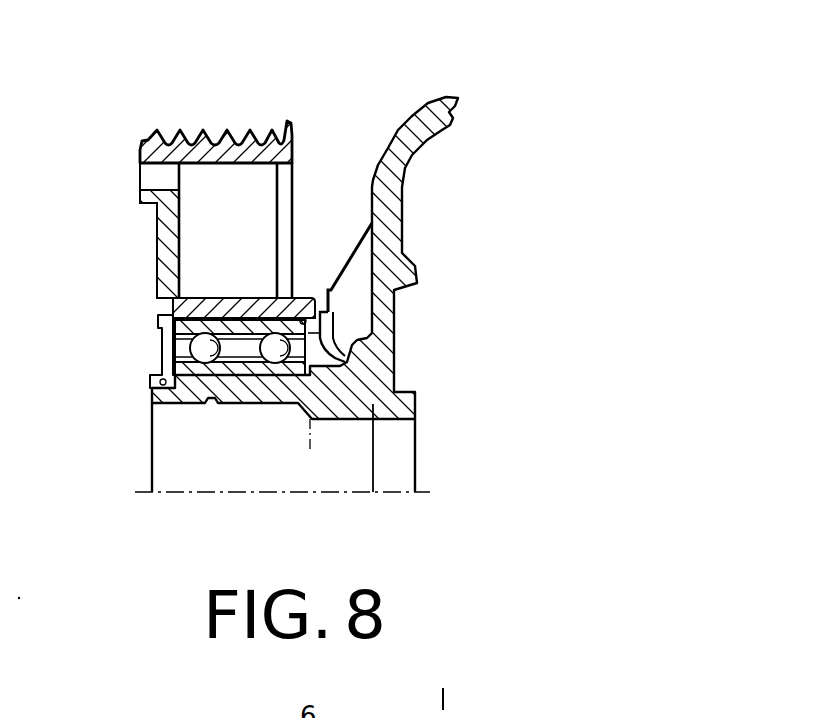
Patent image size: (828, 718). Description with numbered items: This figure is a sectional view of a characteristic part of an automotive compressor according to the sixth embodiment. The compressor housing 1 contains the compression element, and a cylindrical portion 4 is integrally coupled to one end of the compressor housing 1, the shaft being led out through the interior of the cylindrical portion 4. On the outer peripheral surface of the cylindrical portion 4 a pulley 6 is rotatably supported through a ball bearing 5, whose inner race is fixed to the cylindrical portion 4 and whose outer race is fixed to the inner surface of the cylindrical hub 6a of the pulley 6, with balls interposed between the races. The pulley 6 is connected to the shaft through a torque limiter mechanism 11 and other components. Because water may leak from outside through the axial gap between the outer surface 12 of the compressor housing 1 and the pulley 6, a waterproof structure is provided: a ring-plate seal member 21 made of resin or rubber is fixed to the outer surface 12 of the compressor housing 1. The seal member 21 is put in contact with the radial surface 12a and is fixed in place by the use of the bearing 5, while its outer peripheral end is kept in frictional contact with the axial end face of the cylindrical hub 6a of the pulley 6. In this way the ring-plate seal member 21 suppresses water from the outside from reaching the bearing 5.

The compressor housing 1 is at (423, 118).
The cylindrical portion 4 is at (330, 404).
The ball bearing 5 is at (157, 345).
The pulley 6 is at (294, 124).
The cylindrical hub 6a is at (222, 298).
The torque limiter mechanism 11 is at (157, 258).
The outer surface 12 is at (350, 258).
The radial surface 12a is at (325, 290).
The ring-plate seal member 21 is at (373, 492).